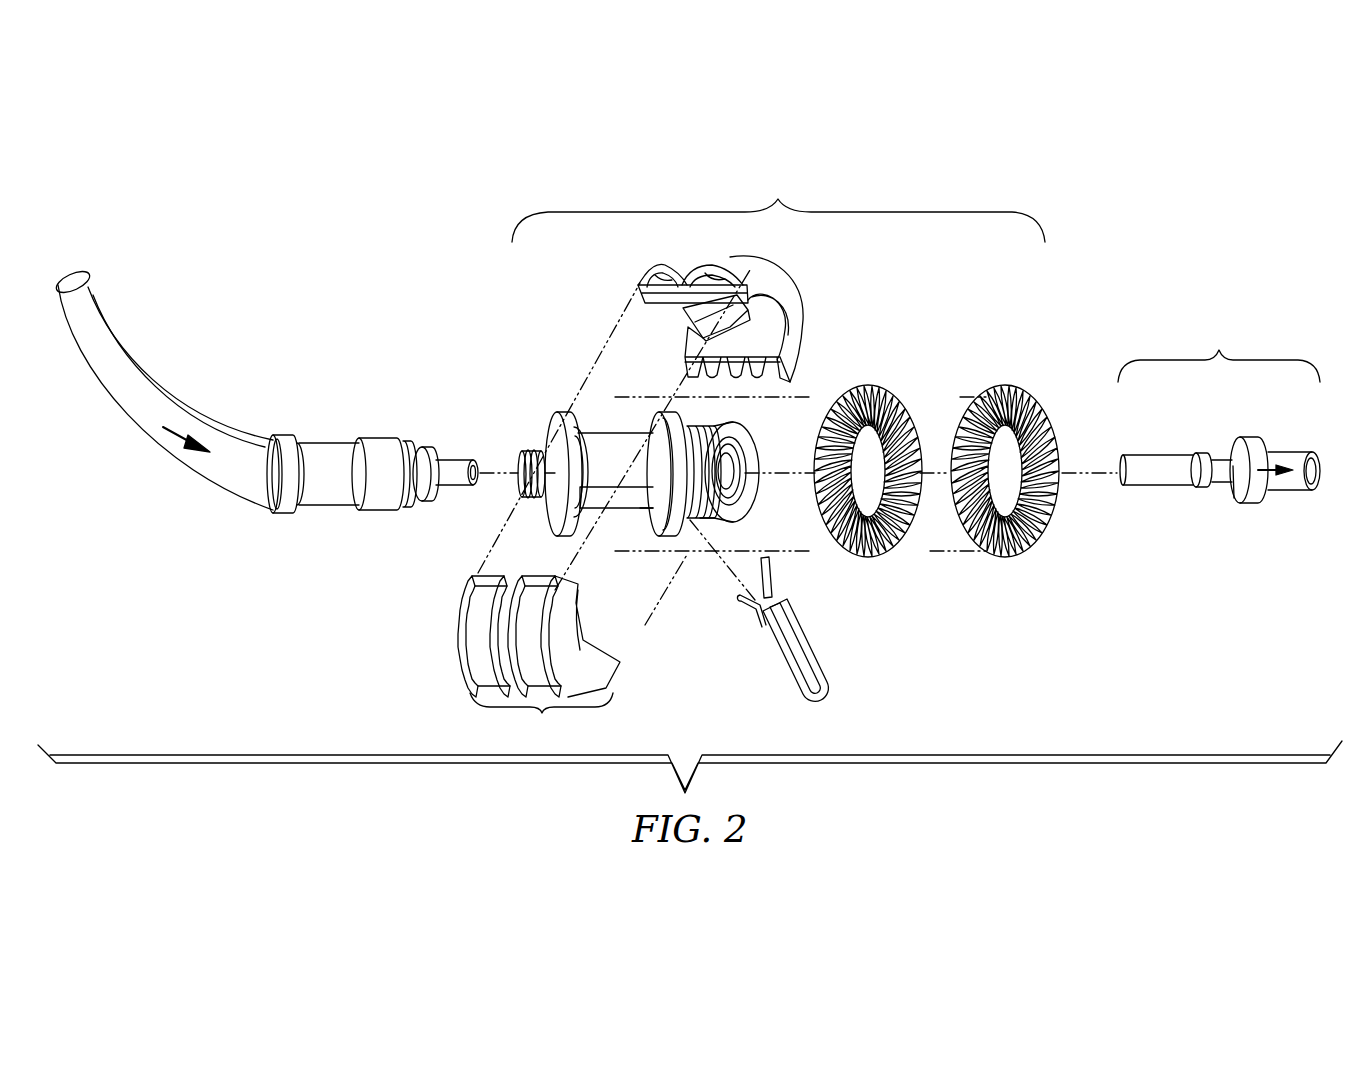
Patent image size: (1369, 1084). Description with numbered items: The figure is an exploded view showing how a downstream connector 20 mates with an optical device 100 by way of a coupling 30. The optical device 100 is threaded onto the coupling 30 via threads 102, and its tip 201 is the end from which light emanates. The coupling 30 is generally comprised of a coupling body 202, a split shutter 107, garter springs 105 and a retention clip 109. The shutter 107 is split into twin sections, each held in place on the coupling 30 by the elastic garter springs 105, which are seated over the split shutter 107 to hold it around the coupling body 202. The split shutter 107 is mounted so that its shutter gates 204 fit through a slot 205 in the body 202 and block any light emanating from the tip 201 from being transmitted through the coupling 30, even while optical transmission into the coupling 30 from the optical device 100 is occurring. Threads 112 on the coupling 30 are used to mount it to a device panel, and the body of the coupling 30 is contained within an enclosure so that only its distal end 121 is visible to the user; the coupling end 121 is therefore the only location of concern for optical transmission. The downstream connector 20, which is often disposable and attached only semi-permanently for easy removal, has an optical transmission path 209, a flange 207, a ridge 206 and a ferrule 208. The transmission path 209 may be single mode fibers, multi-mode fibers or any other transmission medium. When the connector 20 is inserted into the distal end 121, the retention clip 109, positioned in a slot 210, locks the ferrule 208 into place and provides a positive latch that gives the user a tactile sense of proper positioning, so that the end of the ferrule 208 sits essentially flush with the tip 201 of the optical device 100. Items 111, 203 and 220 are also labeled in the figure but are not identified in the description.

The downstream connector 20 is at (1219, 353).
The coupling 30 is at (778, 208).
The optical device 100 is at (372, 440).
The threads 102 is at (540, 448).
The garter springs 105 is at (907, 403).
The split shutter 107 is at (539, 660).
The retention clip 109 is at (787, 673).
The hub body 111 is at (690, 521).
The threads 112 is at (731, 428).
The distal end 121 is at (762, 517).
The tip 201 is at (450, 457).
The coupling body 202 is at (632, 486).
The clamp tabs 203 is at (660, 265).
The shutter gates 204 is at (683, 311).
The slot 205 is at (606, 506).
The ridge 206 is at (1205, 487).
The flange 207 is at (1244, 503).
The ferrule 208 is at (1180, 453).
The optical transmission path 209 is at (1283, 484).
The slot 210 is at (703, 530).
The curved tube 220 is at (183, 413).